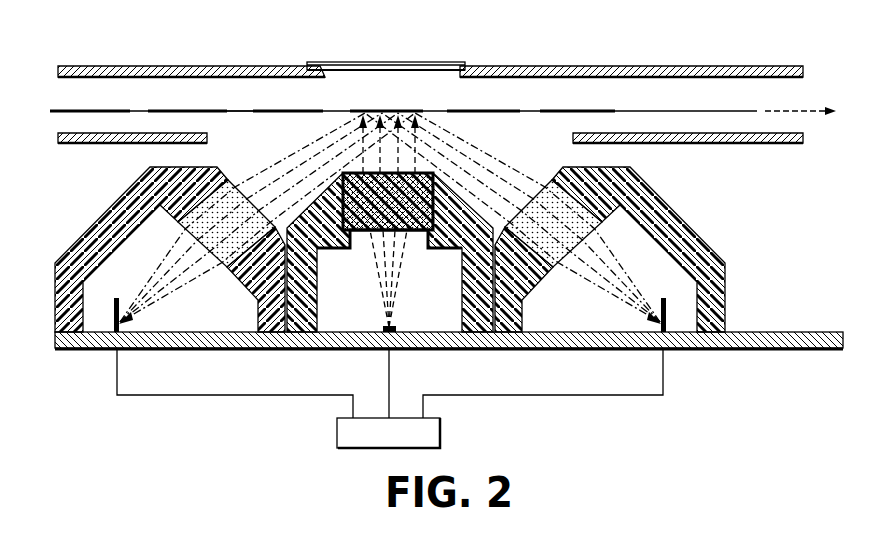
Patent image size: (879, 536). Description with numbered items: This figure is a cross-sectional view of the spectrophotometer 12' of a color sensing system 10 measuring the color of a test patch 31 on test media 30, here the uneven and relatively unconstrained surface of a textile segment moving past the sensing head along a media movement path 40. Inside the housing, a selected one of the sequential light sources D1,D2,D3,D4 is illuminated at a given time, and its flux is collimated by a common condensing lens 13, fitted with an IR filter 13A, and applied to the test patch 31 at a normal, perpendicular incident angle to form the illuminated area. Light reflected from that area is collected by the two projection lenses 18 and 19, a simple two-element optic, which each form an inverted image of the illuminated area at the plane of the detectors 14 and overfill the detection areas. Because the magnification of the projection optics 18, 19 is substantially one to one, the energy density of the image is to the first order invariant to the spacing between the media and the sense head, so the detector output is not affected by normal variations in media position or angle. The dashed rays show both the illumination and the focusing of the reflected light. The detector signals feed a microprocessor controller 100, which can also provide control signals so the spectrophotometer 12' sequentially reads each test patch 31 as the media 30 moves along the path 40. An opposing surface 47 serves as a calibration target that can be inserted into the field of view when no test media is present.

The color sensing system 10 is at (537, 52).
The opposing surface 47 is at (432, 62).
The test media 30 is at (690, 110).
The test patch 31 is at (262, 113).
The media movement path 40 is at (806, 109).
The spectrophotometer 12' is at (417, 249).
The projection lens 19 is at (230, 178).
The projection lens 18 is at (536, 183).
The IR filter 13A is at (348, 170).
The condensing lens 13 is at (428, 168).
The detectors 14 is at (114, 310).
The light sources D1,D2,D3,D4 is at (391, 350).
The microprocessor controller 100 is at (441, 432).